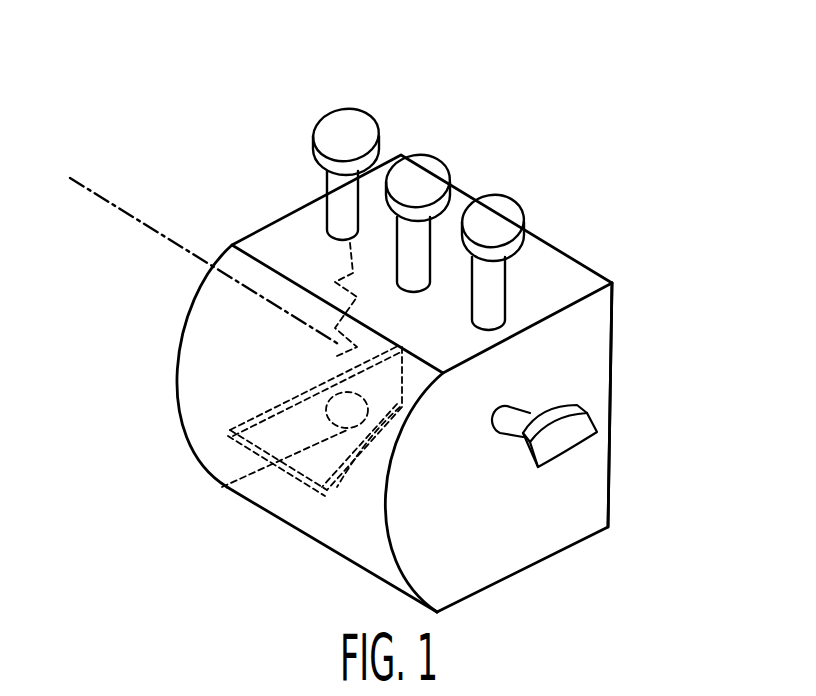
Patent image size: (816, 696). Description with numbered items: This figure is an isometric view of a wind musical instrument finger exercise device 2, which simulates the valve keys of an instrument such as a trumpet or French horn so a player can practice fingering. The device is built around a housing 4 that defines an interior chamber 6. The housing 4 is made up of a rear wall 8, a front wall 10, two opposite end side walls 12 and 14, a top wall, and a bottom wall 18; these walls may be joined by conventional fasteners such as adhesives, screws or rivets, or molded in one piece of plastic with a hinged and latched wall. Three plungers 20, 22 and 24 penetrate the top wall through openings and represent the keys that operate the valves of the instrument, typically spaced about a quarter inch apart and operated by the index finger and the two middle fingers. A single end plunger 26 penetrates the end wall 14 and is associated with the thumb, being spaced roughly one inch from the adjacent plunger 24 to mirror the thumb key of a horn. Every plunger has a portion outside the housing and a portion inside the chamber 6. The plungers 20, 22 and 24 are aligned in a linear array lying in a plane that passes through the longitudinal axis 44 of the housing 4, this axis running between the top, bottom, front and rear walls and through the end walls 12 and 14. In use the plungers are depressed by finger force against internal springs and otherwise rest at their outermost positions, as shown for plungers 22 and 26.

The wind musical instrument finger exercise device 2 is at (616, 224).
The housing 4 is at (164, 285).
The interior chamber 6 is at (577, 382).
The rear wall 8 is at (612, 345).
The front wall 10 is at (190, 378).
The end side wall 12 is at (263, 230).
The end side wall 14 is at (517, 552).
The bottom wall 18 is at (287, 525).
The plunger 20 is at (358, 102).
The plunger 22 is at (441, 150).
The plunger 24 is at (520, 197).
The end plunger 26 is at (570, 440).
The longitudinal axis 44 is at (108, 200).